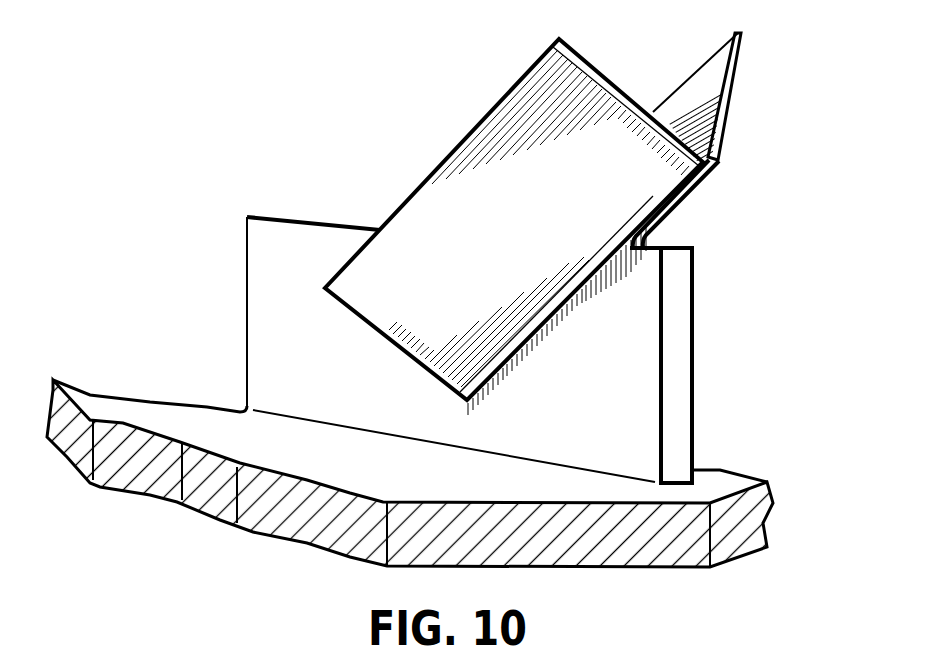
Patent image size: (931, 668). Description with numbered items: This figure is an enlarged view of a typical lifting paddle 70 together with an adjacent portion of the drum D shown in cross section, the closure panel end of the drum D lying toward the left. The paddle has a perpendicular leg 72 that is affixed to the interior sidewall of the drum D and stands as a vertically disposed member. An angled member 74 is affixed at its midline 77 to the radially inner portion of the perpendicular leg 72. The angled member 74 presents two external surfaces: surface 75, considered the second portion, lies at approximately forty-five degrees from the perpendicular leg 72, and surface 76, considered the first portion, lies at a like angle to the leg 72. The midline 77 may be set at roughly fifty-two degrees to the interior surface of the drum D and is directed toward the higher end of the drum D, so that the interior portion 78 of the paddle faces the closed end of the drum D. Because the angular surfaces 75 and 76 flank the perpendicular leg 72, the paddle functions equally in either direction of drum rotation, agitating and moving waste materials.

The lifting paddle 70 is at (292, 122).
The perpendicular leg 72 is at (625, 368).
The angled member 74 is at (593, 72).
The external surface 75 is at (733, 115).
The external surface 76 is at (503, 128).
The midline 77 is at (684, 204).
The interior portion 78 is at (700, 97).
The drum D is at (307, 542).